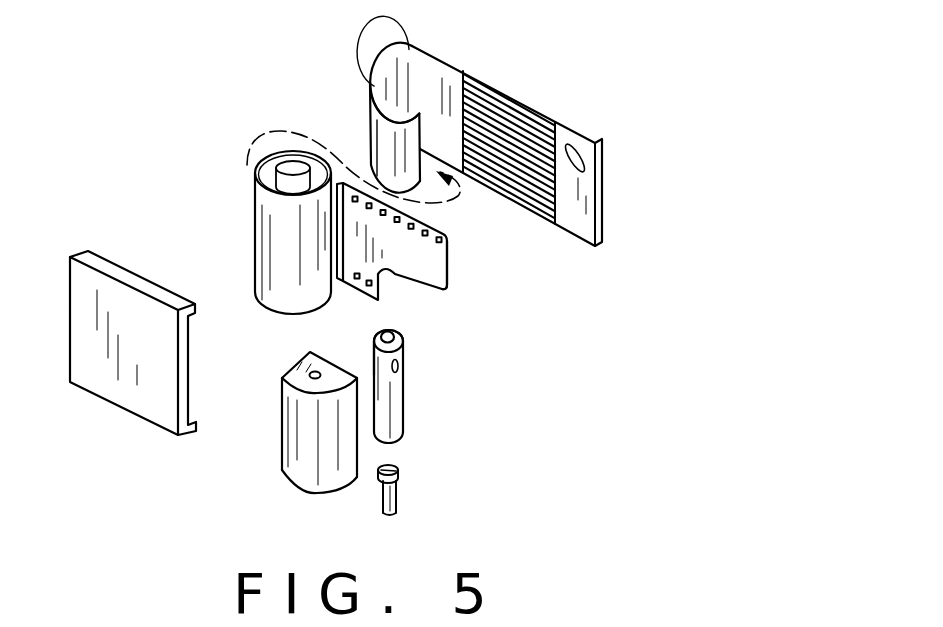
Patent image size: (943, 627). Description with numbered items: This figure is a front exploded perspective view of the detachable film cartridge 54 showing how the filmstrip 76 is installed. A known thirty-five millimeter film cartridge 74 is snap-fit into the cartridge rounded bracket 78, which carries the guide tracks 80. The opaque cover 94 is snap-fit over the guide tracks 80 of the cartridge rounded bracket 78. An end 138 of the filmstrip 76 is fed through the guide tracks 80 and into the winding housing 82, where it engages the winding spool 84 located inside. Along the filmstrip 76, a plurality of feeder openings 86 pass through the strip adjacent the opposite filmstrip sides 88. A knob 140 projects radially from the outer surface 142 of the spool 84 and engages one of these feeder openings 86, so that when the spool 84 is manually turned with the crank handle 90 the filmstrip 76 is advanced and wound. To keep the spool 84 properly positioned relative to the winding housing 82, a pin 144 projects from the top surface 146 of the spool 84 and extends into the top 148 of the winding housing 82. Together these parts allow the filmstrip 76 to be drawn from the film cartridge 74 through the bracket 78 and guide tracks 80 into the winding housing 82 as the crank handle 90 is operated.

The detachable film cartridge 54 is at (560, 46).
The cartridge rounded bracket 78 is at (441, 75).
The guide tracks 80 is at (528, 118).
The feeder openings 86 is at (400, 209).
The 35 mm film cartridge 74 is at (277, 238).
The filmstrip 76 is at (437, 261).
The end of filmstrip 138 is at (448, 288).
The filmstrip sides 88 is at (352, 178).
The opaque cover 94 is at (138, 388).
The winding housing 82 is at (305, 418).
The top of winding housing 148 is at (296, 379).
The winding spool 84 is at (394, 415).
The pin 144 is at (396, 337).
The knob 140 is at (398, 372).
The top surface of spool 146 is at (403, 343).
The outer surface of spool 142 is at (373, 365).
The crank handle 90 is at (400, 495).